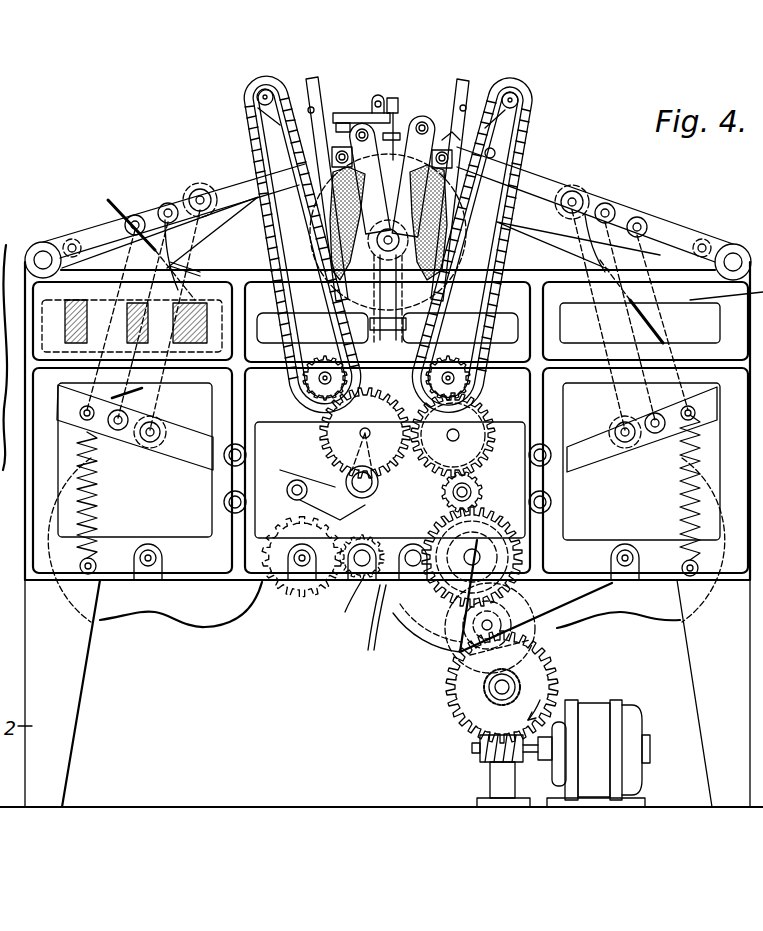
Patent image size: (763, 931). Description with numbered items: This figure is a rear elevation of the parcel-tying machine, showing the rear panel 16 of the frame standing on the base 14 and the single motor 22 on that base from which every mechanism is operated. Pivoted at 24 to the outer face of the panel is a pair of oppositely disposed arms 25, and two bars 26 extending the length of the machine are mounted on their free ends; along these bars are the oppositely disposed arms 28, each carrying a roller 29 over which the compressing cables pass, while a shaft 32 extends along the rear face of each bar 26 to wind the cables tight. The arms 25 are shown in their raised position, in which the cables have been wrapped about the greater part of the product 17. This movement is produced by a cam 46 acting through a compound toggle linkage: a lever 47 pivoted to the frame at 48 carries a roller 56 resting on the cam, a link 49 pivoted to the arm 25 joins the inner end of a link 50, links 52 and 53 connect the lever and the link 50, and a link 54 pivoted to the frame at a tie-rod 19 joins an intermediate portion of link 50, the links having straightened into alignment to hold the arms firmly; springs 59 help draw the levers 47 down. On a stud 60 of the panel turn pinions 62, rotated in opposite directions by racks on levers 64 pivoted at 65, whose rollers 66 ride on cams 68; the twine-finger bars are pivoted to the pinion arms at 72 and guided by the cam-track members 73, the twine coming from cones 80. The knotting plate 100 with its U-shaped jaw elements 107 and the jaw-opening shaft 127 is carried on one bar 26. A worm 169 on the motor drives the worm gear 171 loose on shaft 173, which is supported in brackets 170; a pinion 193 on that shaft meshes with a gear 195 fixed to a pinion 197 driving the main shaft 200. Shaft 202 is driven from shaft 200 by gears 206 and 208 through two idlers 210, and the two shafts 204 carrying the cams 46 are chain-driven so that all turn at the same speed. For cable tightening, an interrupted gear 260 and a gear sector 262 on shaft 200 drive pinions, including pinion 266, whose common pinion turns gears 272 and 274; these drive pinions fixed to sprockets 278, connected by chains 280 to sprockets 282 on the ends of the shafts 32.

The base 14 is at (148, 805).
The rear panel 16 is at (720, 250).
The product 17 is at (430, 240).
The tie-rods 19 is at (43, 250).
The motor 22 is at (642, 720).
The pivot 24 is at (320, 381).
The arms 25 is at (388, 244).
The bars 26 is at (318, 78).
The arms 28 is at (448, 132).
The roller 29 is at (342, 145).
The shaft 32 is at (257, 95).
The cam 46 is at (205, 628).
The lever 47 is at (178, 448).
The pivot 48 is at (228, 462).
The link 49 is at (222, 185).
The link 50 is at (163, 208).
The link 52 is at (128, 212).
The link 53 is at (143, 393).
The link 54 is at (70, 238).
The roller 56 is at (180, 428).
The springs 59 is at (134, 493).
The stud 60 is at (395, 290).
The pinions 62 is at (372, 228).
The levers 64 is at (370, 494).
The pivot 65 is at (228, 506).
The rollers 66 is at (295, 482).
The cams 68 is at (346, 520).
The pivotal connection 72 is at (362, 128).
The members 73 is at (262, 266).
The twine cones 80 is at (183, 265).
The plate 100 is at (378, 98).
The U-shaped elements 107 is at (396, 98).
The shaft 127 is at (386, 98).
The worm 169 is at (480, 757).
The brackets 170 is at (545, 642).
The worm gear 171 is at (455, 712).
The shaft 173 is at (522, 682).
The pinion 193 is at (489, 690).
The gear 195 is at (569, 658).
The pinion 197 is at (562, 620).
The shaft 200 is at (482, 556).
The shaft 202 is at (300, 585).
The shafts 204 is at (146, 572).
The gear 206 is at (413, 575).
The gear 208 is at (362, 575).
The idlers 210 is at (370, 625).
The interrupted gear 260 is at (530, 612).
The gear sector 262 is at (420, 640).
The pinion 266 is at (478, 491).
The gear 272 is at (450, 438).
The gear 274 is at (372, 432).
The sprockets 278 is at (322, 357).
The chains 280 is at (243, 125).
The sprockets 282 is at (268, 88).